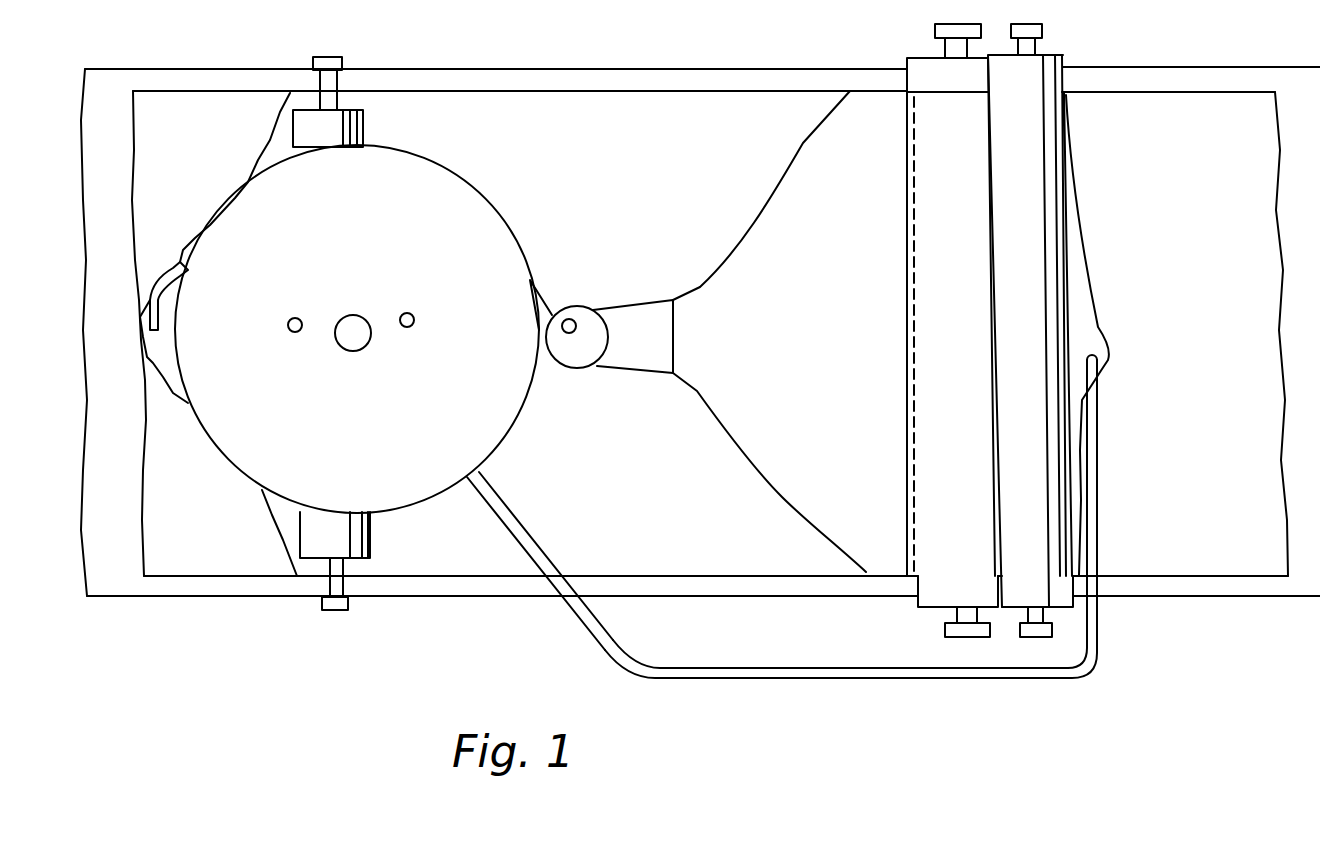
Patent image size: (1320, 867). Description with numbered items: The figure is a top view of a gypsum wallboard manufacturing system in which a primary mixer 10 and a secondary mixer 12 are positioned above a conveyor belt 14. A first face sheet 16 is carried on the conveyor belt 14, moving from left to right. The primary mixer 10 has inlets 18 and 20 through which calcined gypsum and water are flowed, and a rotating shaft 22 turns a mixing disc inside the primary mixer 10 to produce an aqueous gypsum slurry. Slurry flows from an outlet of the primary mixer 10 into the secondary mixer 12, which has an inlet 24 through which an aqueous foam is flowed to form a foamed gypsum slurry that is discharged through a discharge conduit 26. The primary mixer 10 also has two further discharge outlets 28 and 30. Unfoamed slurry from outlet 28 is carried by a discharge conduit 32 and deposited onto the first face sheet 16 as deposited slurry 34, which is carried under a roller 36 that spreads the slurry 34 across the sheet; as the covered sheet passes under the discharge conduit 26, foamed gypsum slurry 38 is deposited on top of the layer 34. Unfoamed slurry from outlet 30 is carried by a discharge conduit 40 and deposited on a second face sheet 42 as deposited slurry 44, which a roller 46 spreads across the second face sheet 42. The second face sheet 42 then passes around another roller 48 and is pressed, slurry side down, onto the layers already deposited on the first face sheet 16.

The primary mixer 10 is at (340, 421).
The secondary mixer 12 is at (550, 331).
The conveyor belt 14 is at (142, 600).
The first face sheet 16 is at (158, 499).
The inlet 18 is at (296, 318).
The inlet 20 is at (413, 320).
The rotating shaft 22 is at (358, 316).
The inlet 24 is at (568, 335).
The discharge conduit 26 is at (662, 341).
The discharge outlet 28 is at (183, 250).
The discharge outlet 30 is at (467, 477).
The discharge conduit 32 is at (150, 300).
The deposited slurry 34 is at (167, 380).
The roller 36 is at (323, 557).
The foamed gypsum slurry 38 is at (759, 361).
The discharge conduit 40 is at (775, 681).
The second face sheet 42 is at (1242, 577).
The deposited slurry 44 is at (1095, 348).
The roller 46 is at (1060, 607).
The roller 48 is at (932, 602).